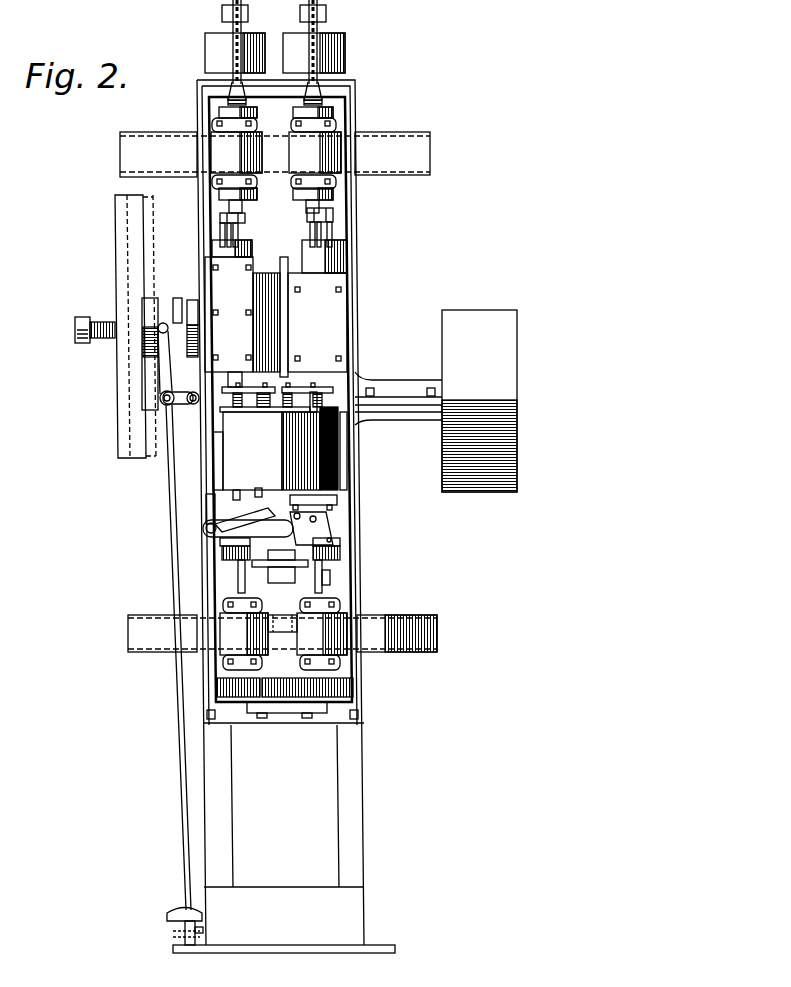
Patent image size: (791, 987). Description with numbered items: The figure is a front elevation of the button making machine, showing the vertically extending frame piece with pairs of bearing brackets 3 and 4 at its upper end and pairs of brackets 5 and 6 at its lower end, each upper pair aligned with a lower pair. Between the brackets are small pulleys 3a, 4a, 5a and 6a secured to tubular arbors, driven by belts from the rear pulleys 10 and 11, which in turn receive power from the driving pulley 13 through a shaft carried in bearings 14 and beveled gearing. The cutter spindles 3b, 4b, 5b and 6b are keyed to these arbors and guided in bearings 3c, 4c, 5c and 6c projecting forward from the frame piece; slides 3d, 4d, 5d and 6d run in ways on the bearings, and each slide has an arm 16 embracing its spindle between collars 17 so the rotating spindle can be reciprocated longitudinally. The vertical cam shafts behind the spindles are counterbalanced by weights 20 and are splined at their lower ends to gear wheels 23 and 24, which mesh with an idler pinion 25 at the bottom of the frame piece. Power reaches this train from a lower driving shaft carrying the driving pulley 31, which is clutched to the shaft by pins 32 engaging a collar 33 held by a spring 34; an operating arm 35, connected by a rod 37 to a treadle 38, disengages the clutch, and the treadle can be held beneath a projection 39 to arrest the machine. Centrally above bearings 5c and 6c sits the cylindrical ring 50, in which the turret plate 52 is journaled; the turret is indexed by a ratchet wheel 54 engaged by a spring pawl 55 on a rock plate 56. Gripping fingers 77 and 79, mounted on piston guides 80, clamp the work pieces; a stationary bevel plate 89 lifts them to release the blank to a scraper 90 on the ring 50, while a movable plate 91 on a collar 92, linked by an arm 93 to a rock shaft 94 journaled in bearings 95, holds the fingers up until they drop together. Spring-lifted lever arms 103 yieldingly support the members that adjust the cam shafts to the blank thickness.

The weights 20 is at (275, 53).
The pulley 10 is at (428, 153).
The pulley 11 is at (436, 621).
The bearing brackets 3 is at (234, 155).
The bearing brackets 4 is at (313, 155).
The pulley 3a is at (236, 152).
The pulley 4a is at (315, 152).
The cutter spindle 3b is at (238, 243).
The bearing 3c is at (229, 314).
The slide 3d is at (220, 236).
The cutter spindle 4b is at (310, 240).
The bearing 4c is at (317, 322).
The slide 4d is at (332, 238).
The arm 16 is at (220, 216).
The collars 17 is at (326, 220).
The gripping finger 79 is at (231, 383).
The guides 80 is at (296, 390).
The gripping finger 77 is at (333, 388).
The bearings 14 is at (392, 394).
The driving pulley 13 is at (479, 401).
The plate 52 is at (232, 411).
The cylindrical ring 50 is at (252, 451).
The scraper 90 is at (318, 418).
The movable plate 91 is at (258, 488).
The collar 92 is at (300, 451).
The arm 93 is at (236, 498).
The stationary plate 89 is at (338, 499).
The bearings 95 is at (206, 516).
The rock shaft 94 is at (207, 530).
The lever arms 103 is at (311, 528).
The bearing 5c is at (220, 545).
The slide 5d is at (222, 556).
The bearing 6c is at (338, 540).
The slide 6d is at (340, 553).
The ratchet wheel 54 is at (272, 566).
The rock plate 56 is at (280, 578).
The cutter spindle 5b is at (238, 578).
The cutter spindle 6b is at (322, 572).
The pawl 55 is at (330, 580).
The bearing brackets 5 is at (242, 635).
The bearing brackets 6 is at (320, 635).
The pulley 5a is at (244, 634).
The pulley 6a is at (322, 634).
The gear wheel 23 is at (258, 690).
The gear wheel 24 is at (327, 700).
The idler pinion 25 is at (284, 713).
The driving pulley 31 is at (135, 326).
The pins 32 is at (175, 300).
The collar 33 is at (196, 298).
The spring 34 is at (98, 345).
The operating arm 35 is at (166, 381).
The rod 37 is at (182, 800).
The treadle 38 is at (169, 908).
The projection 39 is at (205, 932).